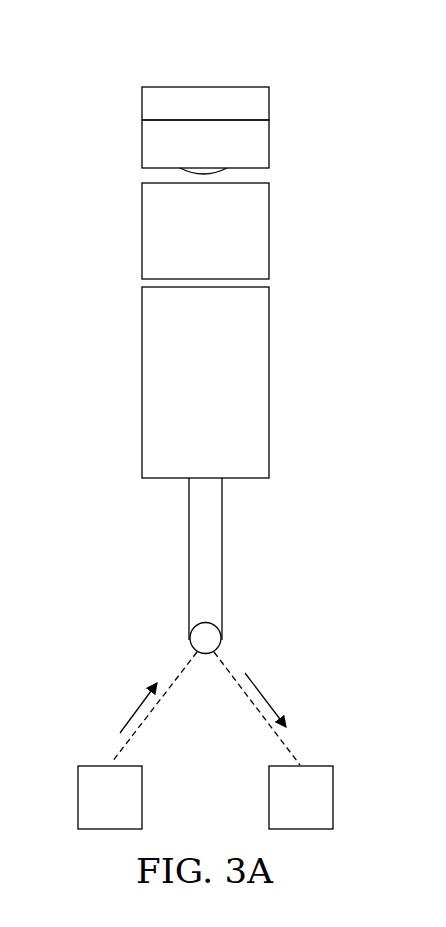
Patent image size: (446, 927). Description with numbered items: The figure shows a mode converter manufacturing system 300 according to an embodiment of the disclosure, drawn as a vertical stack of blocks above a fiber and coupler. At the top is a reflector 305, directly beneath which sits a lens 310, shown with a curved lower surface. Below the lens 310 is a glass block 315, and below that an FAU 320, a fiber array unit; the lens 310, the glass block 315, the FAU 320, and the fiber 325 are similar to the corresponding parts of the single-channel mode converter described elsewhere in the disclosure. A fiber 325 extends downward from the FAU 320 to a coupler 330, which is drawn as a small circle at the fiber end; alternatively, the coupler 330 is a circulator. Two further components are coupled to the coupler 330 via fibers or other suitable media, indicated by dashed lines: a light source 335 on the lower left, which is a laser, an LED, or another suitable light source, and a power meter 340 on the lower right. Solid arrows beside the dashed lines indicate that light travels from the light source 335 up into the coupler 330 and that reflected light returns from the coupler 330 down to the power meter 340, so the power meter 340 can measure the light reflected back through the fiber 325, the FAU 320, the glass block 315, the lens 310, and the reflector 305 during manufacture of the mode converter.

The mode converter manufacturing system 300 is at (138, 64).
The reflector 305 is at (150, 102).
The lens 310 is at (150, 142).
The glass block 315 is at (150, 230).
The FAU 320 is at (150, 381).
The fiber 325 is at (197, 560).
The coupler 330 is at (205, 654).
The light source 335 is at (85, 800).
The power meter 340 is at (325, 800).